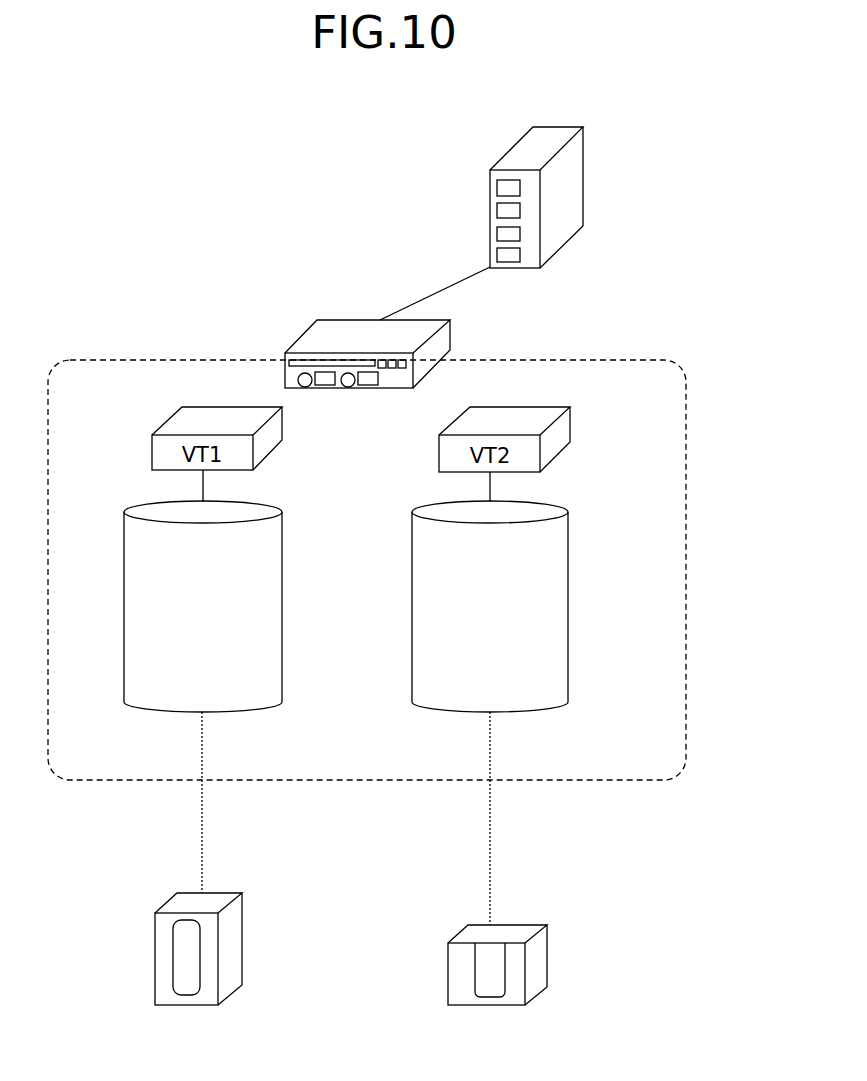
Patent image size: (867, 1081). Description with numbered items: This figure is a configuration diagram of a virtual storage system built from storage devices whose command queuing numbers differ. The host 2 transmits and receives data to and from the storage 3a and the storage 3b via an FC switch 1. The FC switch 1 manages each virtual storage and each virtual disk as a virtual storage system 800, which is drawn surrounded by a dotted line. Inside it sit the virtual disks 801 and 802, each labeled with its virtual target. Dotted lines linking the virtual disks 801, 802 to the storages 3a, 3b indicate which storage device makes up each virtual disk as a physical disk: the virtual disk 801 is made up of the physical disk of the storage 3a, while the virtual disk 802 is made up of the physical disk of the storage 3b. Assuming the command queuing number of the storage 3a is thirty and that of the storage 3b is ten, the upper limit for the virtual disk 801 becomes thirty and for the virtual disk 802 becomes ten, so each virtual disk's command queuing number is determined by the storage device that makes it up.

The FC switch 1 is at (338, 319).
The host 2 is at (585, 175).
The storage 3a is at (243, 921).
The storage 3b is at (548, 953).
The virtual storage system 800 is at (687, 421).
The virtual disk 801 is at (283, 573).
The virtual disk 802 is at (569, 573).